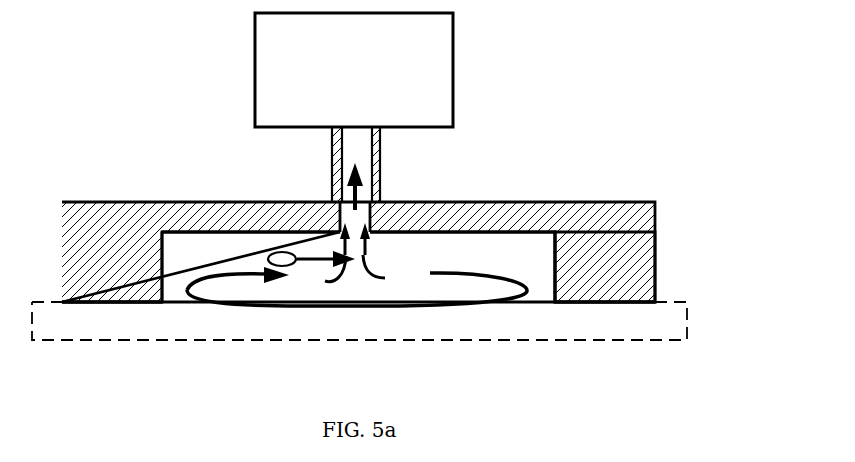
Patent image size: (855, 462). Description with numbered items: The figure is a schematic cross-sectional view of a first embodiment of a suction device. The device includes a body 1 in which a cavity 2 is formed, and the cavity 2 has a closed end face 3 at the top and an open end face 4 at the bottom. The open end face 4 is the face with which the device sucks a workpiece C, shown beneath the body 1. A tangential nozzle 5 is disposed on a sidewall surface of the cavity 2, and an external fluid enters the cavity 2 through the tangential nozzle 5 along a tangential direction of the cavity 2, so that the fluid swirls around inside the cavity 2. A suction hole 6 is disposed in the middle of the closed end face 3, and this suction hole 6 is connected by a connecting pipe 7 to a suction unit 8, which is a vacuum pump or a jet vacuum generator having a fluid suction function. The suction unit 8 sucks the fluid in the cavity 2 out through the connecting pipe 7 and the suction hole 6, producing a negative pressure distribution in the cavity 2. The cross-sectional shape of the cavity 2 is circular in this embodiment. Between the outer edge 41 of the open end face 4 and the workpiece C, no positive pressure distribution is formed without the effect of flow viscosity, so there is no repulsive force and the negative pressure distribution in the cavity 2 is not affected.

The body 1 is at (153, 202).
The cavity 2 is at (570, 212).
The closed end face 3 is at (527, 263).
The open end face 4 is at (372, 302).
The outer edge 41 is at (93, 302).
The tangential nozzle 5 is at (282, 253).
The suction hole 6 is at (350, 218).
The connecting pipe 7 is at (380, 148).
The suction unit 8 is at (435, 33).
The workpiece C is at (187, 315).